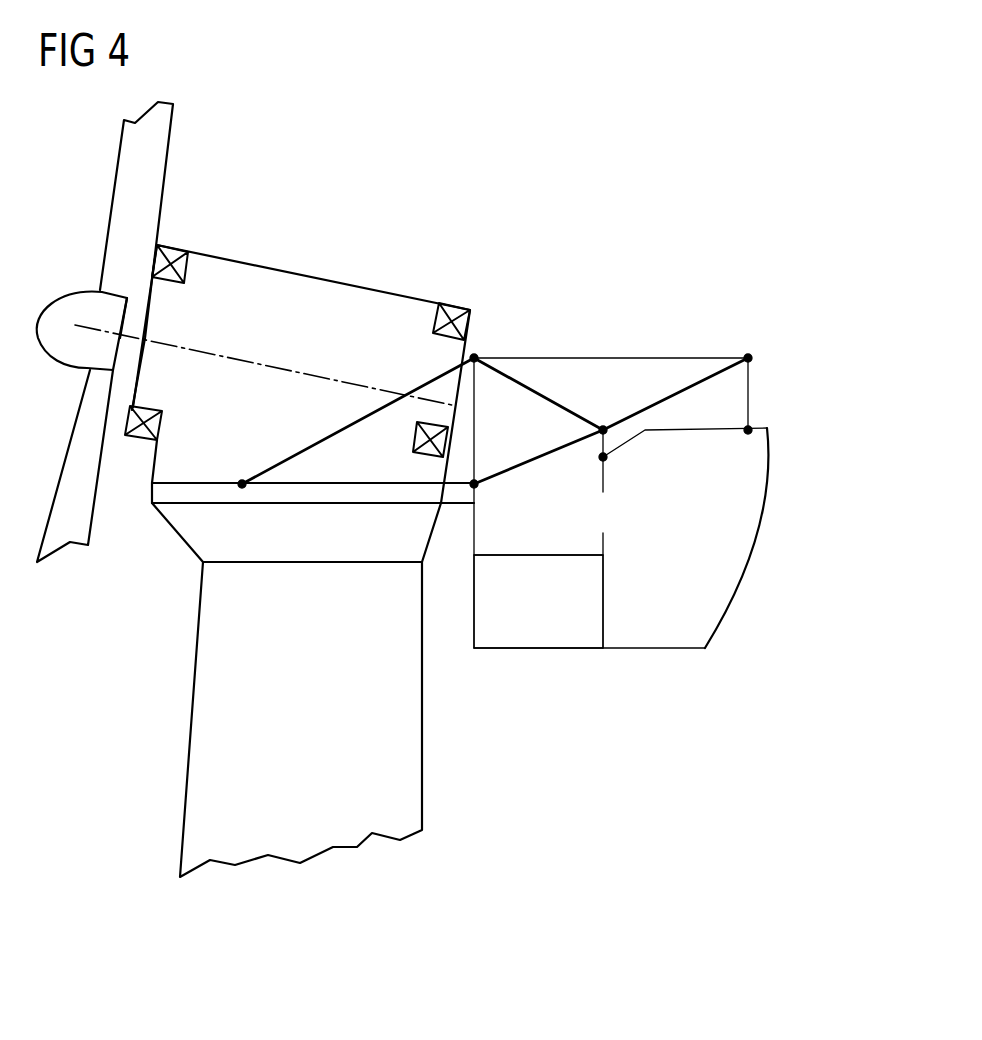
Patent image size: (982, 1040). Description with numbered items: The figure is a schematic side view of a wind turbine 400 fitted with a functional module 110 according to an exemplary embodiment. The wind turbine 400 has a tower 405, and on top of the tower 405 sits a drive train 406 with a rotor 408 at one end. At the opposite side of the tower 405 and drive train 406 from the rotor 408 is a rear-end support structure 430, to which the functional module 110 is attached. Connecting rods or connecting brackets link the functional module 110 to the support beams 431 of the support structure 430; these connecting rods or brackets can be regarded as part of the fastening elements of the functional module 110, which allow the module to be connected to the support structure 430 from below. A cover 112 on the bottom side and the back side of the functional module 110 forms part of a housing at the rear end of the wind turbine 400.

The wind turbine 400 is at (248, 253).
The tower 405 is at (192, 697).
The drive train 406 is at (287, 370).
The rotor 408 is at (62, 290).
The support structure 430 is at (693, 343).
The support beams 431 is at (690, 387).
The functional module 110 is at (519, 638).
The cover 112 is at (740, 567).